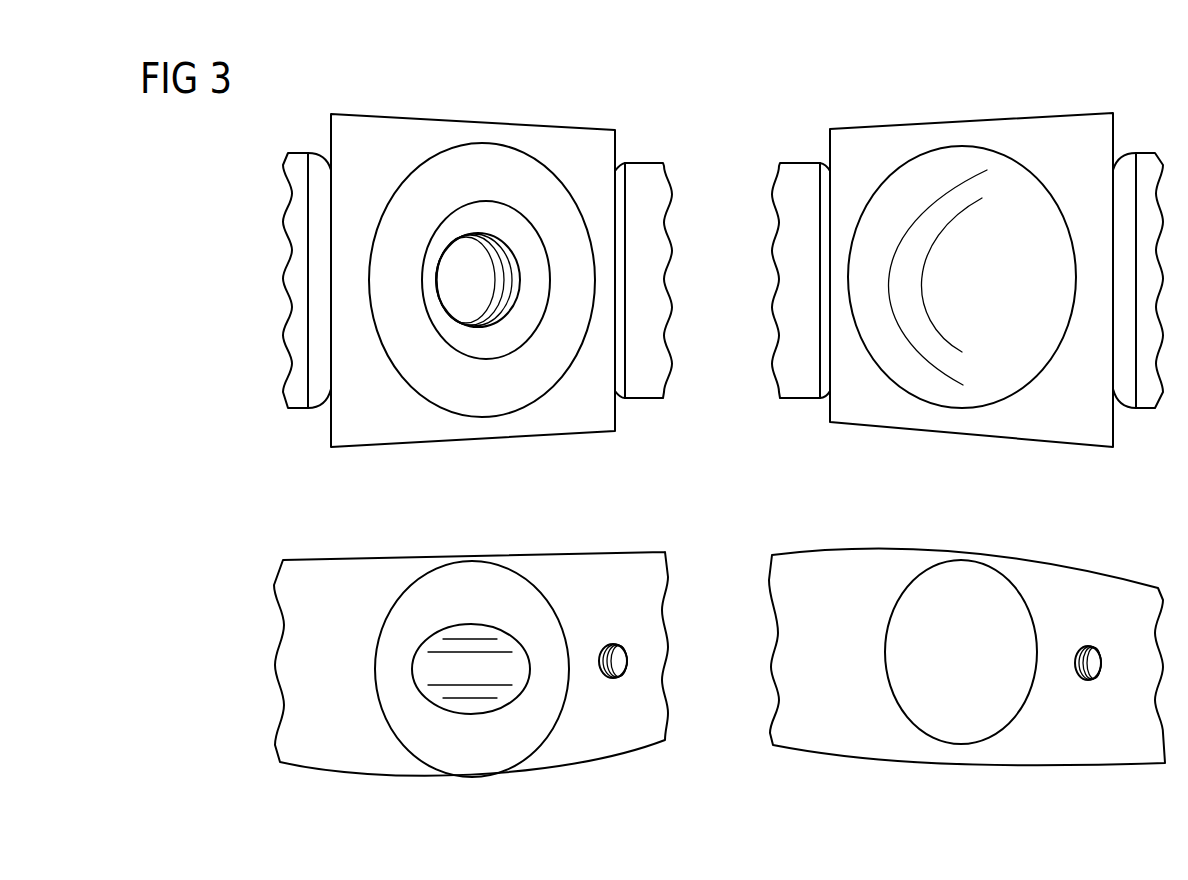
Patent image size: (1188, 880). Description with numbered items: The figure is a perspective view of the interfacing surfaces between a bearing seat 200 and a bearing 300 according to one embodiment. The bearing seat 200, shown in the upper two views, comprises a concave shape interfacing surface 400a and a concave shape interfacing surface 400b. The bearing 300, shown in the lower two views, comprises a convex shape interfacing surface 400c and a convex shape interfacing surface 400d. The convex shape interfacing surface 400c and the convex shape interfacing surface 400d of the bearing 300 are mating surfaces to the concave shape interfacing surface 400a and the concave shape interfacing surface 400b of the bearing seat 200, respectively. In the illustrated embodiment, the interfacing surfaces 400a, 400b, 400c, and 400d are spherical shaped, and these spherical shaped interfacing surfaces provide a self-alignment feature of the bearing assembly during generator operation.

The bearing seat 200 is at (559, 151).
The bearing 300 is at (550, 579).
The concave shape interfacing surface 400a is at (487, 172).
The concave shape interfacing surface 400b is at (955, 160).
The convex shape interfacing surface 400c is at (487, 602).
The convex shape interfacing surface 400d is at (955, 590).